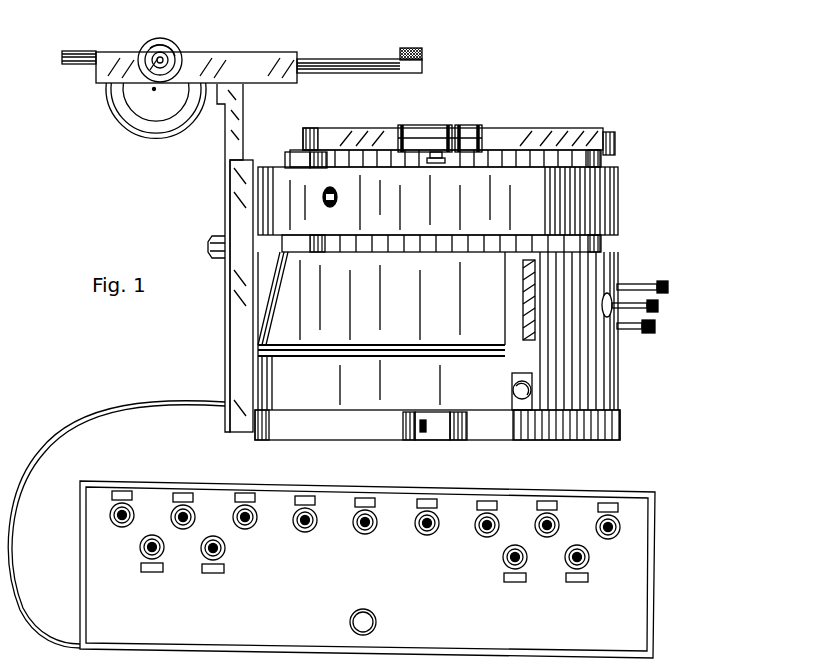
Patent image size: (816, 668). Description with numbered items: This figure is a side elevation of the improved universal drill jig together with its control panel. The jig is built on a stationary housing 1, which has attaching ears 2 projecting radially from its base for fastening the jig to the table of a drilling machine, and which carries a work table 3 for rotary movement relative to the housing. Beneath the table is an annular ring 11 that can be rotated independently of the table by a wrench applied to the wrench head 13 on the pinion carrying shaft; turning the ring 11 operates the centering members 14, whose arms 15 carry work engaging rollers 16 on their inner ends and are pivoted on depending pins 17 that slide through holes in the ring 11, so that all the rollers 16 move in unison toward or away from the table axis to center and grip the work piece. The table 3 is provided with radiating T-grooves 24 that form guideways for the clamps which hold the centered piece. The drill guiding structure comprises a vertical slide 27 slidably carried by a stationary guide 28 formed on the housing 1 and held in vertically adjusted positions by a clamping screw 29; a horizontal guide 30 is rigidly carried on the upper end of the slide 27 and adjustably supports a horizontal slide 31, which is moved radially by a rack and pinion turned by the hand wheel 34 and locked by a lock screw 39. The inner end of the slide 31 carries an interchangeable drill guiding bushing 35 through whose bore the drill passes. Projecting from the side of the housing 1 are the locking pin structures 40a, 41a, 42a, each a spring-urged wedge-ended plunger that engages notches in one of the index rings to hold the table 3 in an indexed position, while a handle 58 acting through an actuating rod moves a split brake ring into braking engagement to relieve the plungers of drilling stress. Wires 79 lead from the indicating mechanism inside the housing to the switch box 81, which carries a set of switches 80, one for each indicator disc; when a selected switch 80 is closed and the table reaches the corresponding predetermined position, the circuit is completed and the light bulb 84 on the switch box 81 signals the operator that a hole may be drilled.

The housing 1 is at (600, 383).
The attaching ears 2 is at (456, 441).
The work table 3 is at (297, 157).
The annular ring 11 is at (606, 201).
The wrench head 13 is at (338, 197).
The centering members 14 is at (375, 121).
The arms 15 is at (581, 142).
The work engaging rollers 16 is at (439, 126).
The depending pins 17 is at (610, 157).
The T-grooves 24 is at (438, 165).
The slide 27 is at (233, 142).
The stationary guide 28 is at (240, 313).
The clamping screw 29 is at (214, 248).
The horizontal guide 30 is at (262, 58).
The horizontal slide 31 is at (336, 62).
The hand wheel 34 is at (146, 125).
The drill guiding bushing 35 is at (423, 52).
The lock screw 39 is at (165, 44).
The locking pin structure 40a is at (651, 284).
The locking pin structure 41a is at (660, 305).
The locking pin structure 42a is at (656, 327).
The handle 58 is at (525, 412).
The wires 79 is at (86, 412).
The switches 80 is at (145, 555).
The switch box 81 is at (640, 567).
The light bulb 84 is at (377, 616).